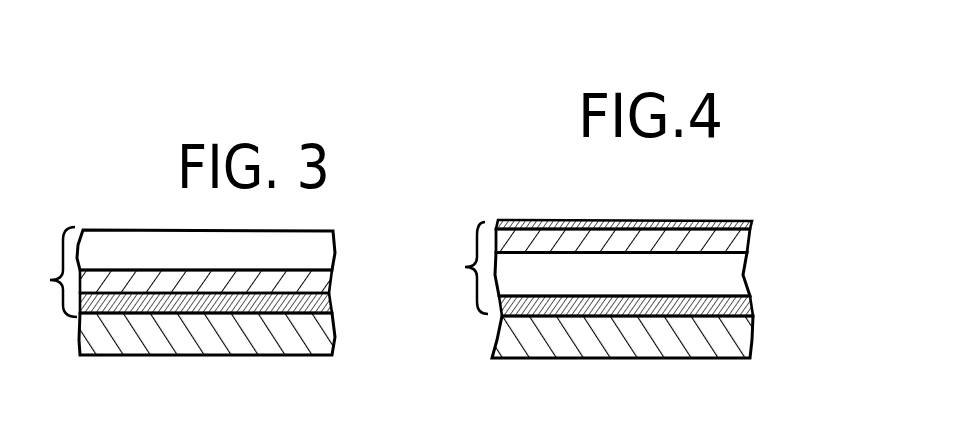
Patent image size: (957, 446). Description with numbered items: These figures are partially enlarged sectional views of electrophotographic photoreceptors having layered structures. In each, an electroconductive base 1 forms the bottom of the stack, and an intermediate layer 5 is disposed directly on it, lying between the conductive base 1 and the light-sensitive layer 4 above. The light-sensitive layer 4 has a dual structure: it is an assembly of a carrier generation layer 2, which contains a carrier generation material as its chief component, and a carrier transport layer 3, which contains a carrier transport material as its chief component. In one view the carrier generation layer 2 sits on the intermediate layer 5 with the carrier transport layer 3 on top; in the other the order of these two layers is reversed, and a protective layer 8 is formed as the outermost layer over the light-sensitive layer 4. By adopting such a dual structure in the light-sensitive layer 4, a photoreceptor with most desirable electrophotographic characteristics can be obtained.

In FIG. 3, the electroconductive base 1 is at (335, 337).
In FIG. 4, the electroconductive base 1 is at (753, 333).
In FIG. 3, the carrier generation layer 2 is at (333, 278).
In FIG. 4, the carrier generation layer 2 is at (751, 240).
In FIG. 3, the carrier transport layer 3 is at (333, 250).
In FIG. 4, the carrier transport layer 3 is at (746, 272).
In FIG. 3, the light-sensitive layer 4 is at (204, 272).
In FIG. 4, the light-sensitive layer 4 is at (628, 262).
In FIG. 3, the intermediate layer 5 is at (329, 303).
In FIG. 4, the intermediate layer 5 is at (753, 302).
In FIG. 4, the protective layer 8 is at (707, 221).